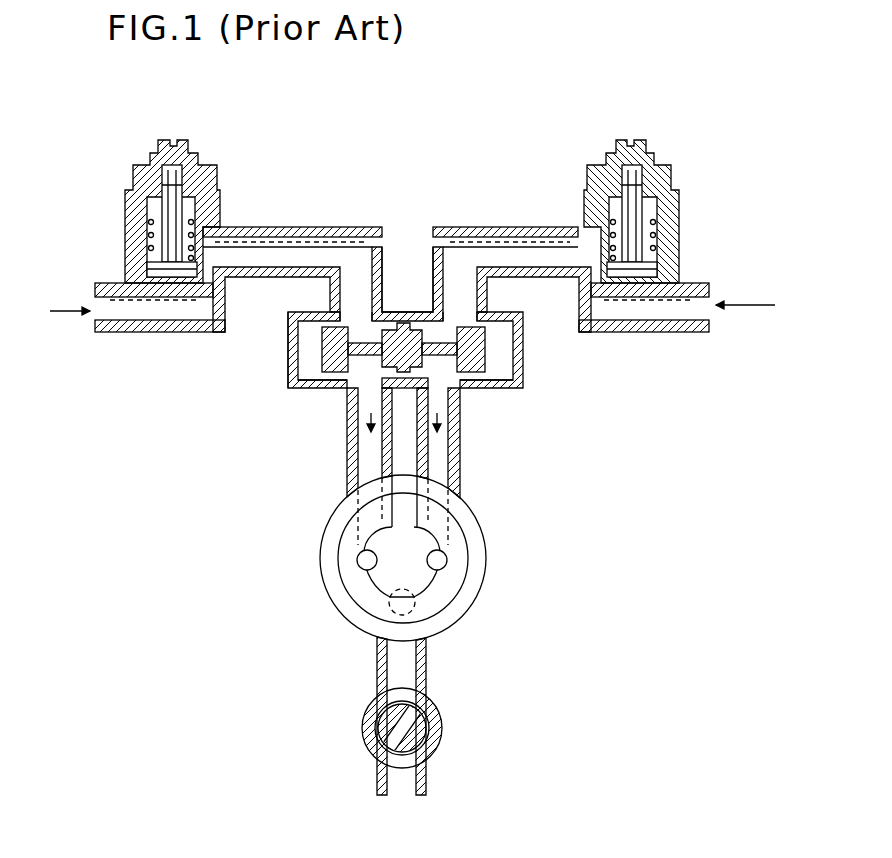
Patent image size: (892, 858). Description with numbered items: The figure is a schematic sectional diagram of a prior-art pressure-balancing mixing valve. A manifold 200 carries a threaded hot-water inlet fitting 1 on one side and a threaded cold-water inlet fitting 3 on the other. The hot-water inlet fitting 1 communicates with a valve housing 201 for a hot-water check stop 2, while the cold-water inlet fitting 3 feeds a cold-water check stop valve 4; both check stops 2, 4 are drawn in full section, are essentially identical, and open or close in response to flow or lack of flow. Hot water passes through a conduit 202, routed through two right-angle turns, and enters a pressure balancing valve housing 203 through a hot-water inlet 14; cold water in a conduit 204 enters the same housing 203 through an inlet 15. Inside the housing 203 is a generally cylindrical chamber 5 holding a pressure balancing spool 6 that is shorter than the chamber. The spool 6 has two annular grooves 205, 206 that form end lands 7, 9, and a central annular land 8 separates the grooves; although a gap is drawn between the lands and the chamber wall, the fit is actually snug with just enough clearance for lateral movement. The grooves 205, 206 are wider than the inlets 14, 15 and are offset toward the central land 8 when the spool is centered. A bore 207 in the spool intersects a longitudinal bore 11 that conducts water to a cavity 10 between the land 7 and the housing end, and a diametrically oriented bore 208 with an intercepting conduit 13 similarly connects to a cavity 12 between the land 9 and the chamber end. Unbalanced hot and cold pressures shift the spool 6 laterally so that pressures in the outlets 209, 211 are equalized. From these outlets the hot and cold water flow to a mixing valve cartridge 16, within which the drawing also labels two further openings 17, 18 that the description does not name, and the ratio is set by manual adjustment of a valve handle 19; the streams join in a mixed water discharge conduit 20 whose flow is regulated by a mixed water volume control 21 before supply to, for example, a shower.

The hot-water inlet fitting 1 is at (118, 281).
The hot-water check stop 2 is at (170, 212).
The cold-water inlet fitting 3 is at (700, 293).
The cold-water check stop valve 4 is at (632, 208).
The cylindrical chamber 5 is at (521, 381).
The pressure balancing spool 6 is at (385, 370).
The annular land 7 is at (338, 373).
The central annular land 8 is at (399, 285).
The annular land 9 is at (470, 370).
The cavity 10 is at (306, 350).
The longitudinally disposed bore 11 is at (343, 347).
The cavity 12 is at (502, 351).
The intercepting conduit 13 is at (462, 347).
The hot-water inlet 14 is at (355, 311).
The cold-water inlet 15 is at (458, 311).
The mixing valve cartridge 16 is at (485, 537).
The hot water opening 17 is at (357, 561).
The cold water opening 18 is at (447, 560).
The valve handle 19 is at (430, 585).
The mixed water discharge conduit 20 is at (388, 666).
The mixed water volume control 21 is at (424, 716).
The manifold 200 is at (395, 300).
The valve housing 201 is at (134, 226).
The hot-water conduit 202 is at (278, 227).
The pressure balancing valve housing 203 is at (292, 385).
The cold-water conduit 204 is at (515, 227).
The annular groove 205 is at (356, 386).
The annular groove 206 is at (446, 386).
The bore 207 is at (373, 338).
The diametrically oriented bore 208 is at (430, 338).
The hot-water outlet 209 is at (370, 460).
The cold-water outlet 211 is at (440, 447).